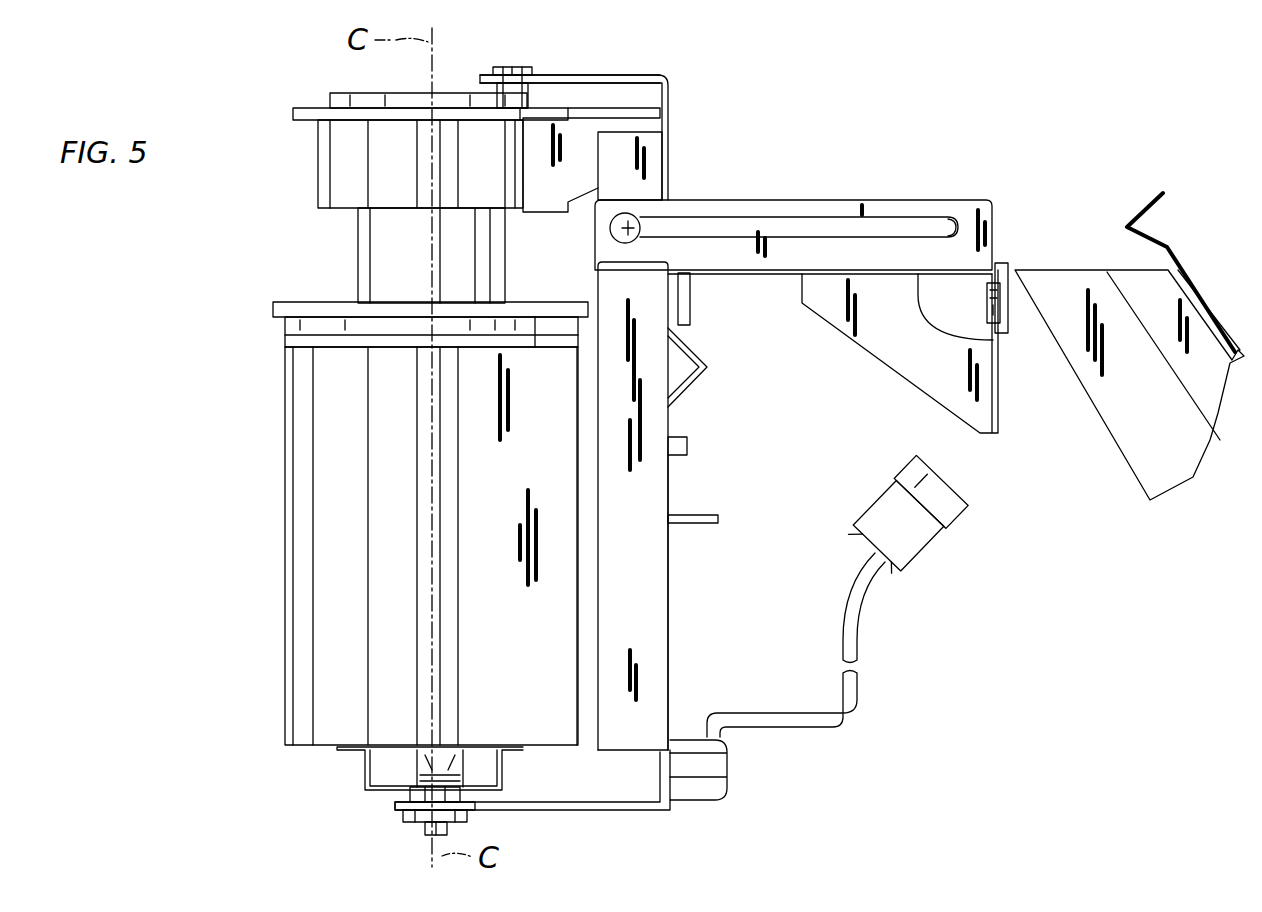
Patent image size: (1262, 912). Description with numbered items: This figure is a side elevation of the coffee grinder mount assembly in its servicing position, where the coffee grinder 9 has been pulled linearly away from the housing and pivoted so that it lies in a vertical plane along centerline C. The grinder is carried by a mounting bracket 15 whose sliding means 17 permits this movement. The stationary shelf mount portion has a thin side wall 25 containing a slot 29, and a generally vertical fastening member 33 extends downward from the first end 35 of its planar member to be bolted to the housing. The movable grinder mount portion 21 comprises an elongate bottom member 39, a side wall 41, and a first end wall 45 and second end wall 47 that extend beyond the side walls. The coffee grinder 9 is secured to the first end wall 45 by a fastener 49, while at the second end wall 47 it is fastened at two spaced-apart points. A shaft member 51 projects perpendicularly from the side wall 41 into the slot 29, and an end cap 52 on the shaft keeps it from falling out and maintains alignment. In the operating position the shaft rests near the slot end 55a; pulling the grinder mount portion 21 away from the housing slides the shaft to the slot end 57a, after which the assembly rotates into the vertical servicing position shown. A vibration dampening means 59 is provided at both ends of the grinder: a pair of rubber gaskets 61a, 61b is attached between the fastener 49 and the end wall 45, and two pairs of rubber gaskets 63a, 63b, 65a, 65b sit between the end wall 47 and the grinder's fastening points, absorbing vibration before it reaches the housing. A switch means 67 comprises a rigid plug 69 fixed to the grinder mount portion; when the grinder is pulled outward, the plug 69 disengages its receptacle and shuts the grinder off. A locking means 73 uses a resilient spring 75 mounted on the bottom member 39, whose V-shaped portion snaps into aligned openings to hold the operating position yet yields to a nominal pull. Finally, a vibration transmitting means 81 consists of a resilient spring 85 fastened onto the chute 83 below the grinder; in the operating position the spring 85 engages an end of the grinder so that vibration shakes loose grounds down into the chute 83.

The coffee grinder 9 is at (285, 598).
The mounting bracket 15 is at (668, 688).
The sliding means 17 is at (798, 204).
The grinder mount portion 21 is at (648, 150).
The side wall 25 is at (653, 505).
The slot 29 is at (784, 217).
The vertical fastening member 33 is at (1009, 302).
The first end 35 is at (1000, 262).
The bottom member 39 is at (713, 791).
The side wall 41 is at (645, 643).
The first end wall 45 is at (593, 808).
The second end wall 47 is at (652, 73).
The fastener 49 is at (503, 790).
The shaft member 51 is at (713, 298).
The end cap 52 is at (628, 214).
The slot end 55a is at (943, 218).
The slot end 57a is at (641, 228).
The vibration dampening means 59 is at (505, 76).
The rubber gasket 61a is at (417, 827).
The rubber gasket 61b is at (407, 795).
The rubber gasket 63a is at (532, 65).
The rubber gasket 65a is at (595, 60).
The rubber gasket 63b is at (449, 137).
The rubber gasket 65b is at (497, 90).
The switch means 67 is at (862, 705).
The rigid plug 69 is at (925, 572).
The locking means 73 is at (727, 506).
The resilient spring 75 is at (710, 357).
The vibration transmitting means 81 is at (1129, 294).
The chute 83 is at (1123, 397).
The resilient spring 85 is at (1135, 215).